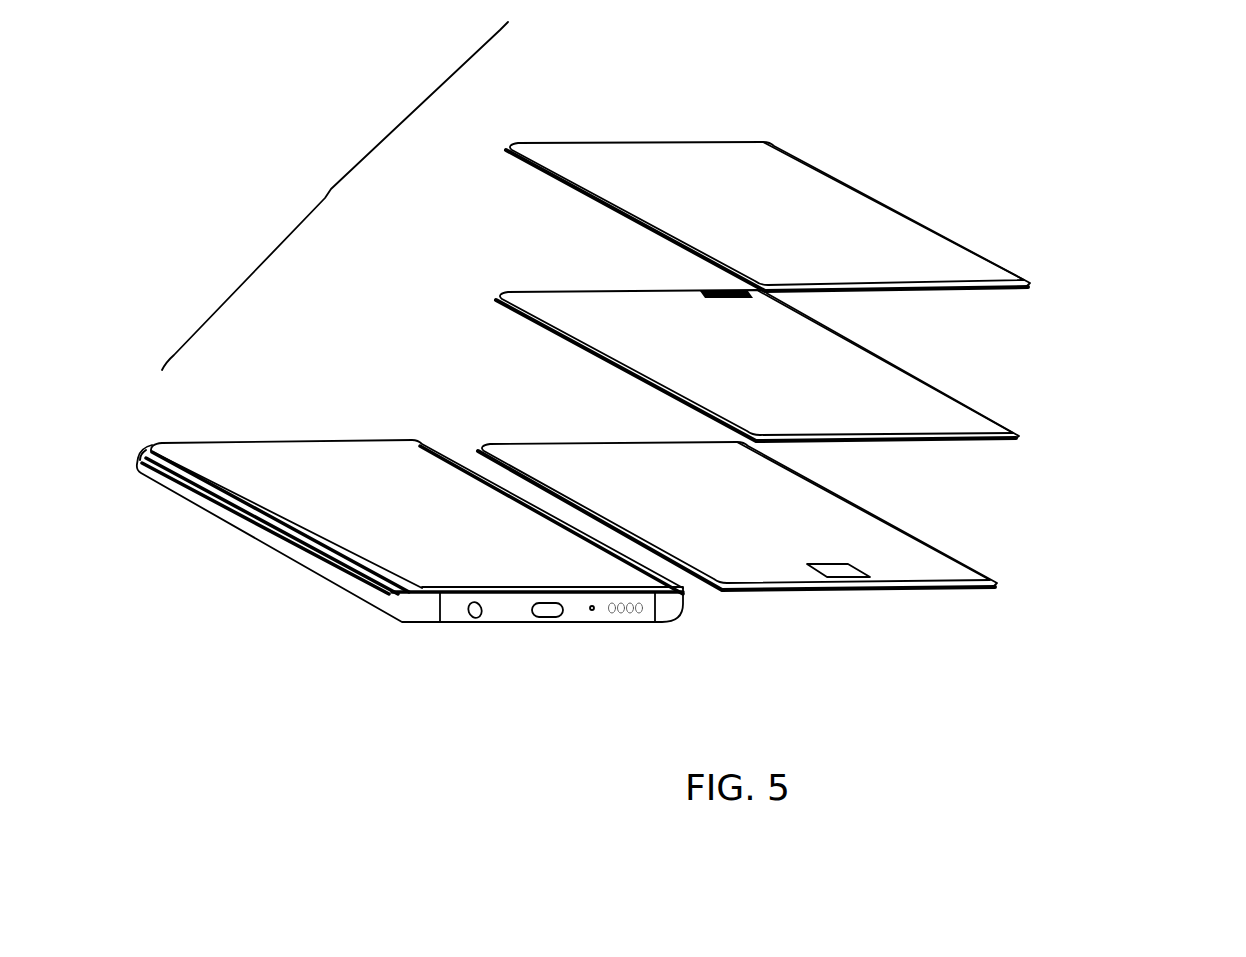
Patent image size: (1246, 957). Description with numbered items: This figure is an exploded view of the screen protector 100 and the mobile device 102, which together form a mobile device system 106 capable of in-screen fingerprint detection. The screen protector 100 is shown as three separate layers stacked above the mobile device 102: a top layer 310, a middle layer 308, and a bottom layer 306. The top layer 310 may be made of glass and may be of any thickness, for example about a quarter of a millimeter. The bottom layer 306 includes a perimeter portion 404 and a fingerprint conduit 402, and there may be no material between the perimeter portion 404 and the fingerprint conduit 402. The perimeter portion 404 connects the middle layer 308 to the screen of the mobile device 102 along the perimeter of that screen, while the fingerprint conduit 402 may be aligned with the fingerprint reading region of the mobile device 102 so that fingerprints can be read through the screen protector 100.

The screen protector 100 is at (686, 476).
The mobile device 102 is at (413, 606).
The mobile device system 106 is at (331, 191).
The bottom layer 306 is at (811, 566).
The middle layer 308 is at (556, 303).
The top layer 310 is at (838, 190).
The fingerprint conduit 402 is at (838, 578).
The perimeter portion 404 is at (986, 579).